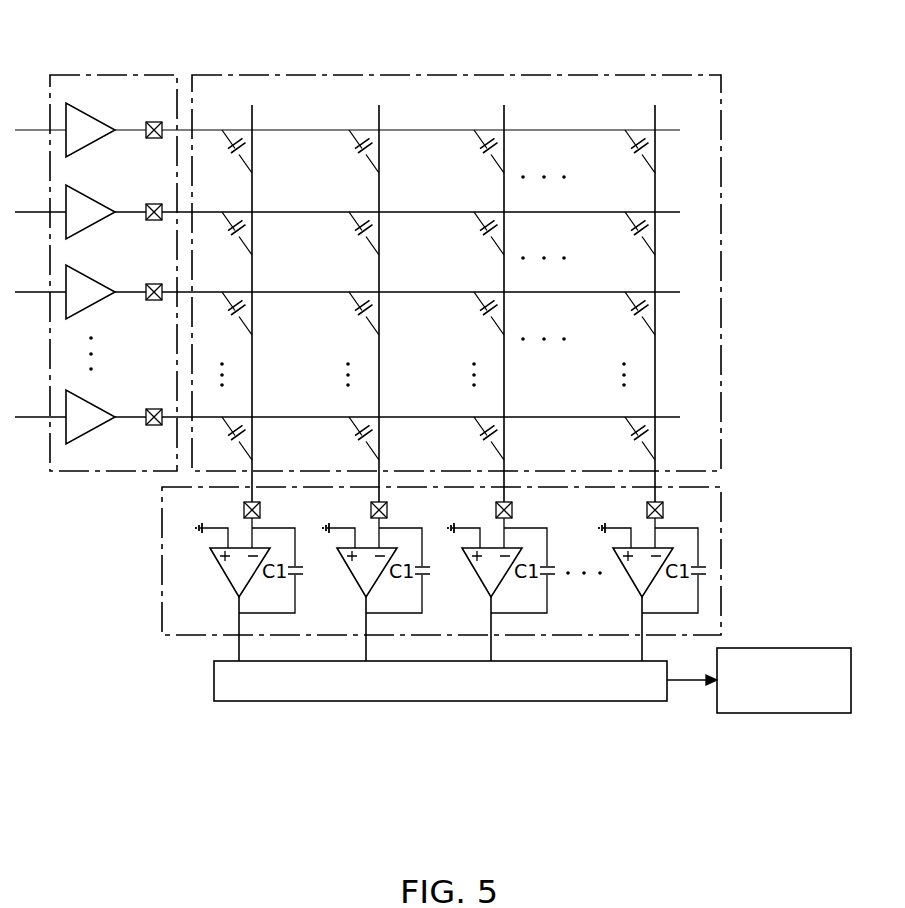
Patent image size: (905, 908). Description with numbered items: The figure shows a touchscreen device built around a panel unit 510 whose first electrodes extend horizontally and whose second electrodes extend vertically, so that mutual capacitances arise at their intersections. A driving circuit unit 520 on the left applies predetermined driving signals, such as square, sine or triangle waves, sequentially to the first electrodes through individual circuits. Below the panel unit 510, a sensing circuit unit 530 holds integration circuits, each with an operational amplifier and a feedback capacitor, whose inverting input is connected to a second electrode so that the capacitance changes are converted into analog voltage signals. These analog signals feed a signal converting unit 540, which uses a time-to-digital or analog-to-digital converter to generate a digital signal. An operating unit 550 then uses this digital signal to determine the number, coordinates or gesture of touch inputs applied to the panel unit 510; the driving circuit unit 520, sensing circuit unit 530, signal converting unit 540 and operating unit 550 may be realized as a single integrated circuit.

The panel unit 510 is at (472, 73).
The driving circuit unit 520 is at (113, 73).
The sensing circuit unit 530 is at (162, 563).
The signal converting unit 540 is at (440, 702).
The operating unit 550 is at (765, 714).